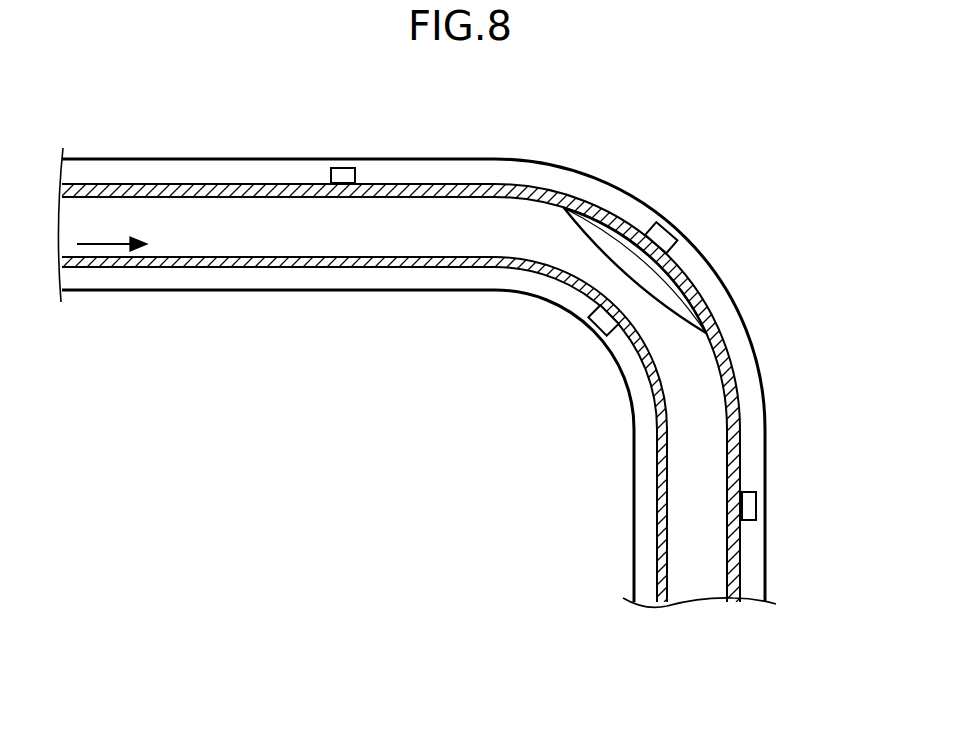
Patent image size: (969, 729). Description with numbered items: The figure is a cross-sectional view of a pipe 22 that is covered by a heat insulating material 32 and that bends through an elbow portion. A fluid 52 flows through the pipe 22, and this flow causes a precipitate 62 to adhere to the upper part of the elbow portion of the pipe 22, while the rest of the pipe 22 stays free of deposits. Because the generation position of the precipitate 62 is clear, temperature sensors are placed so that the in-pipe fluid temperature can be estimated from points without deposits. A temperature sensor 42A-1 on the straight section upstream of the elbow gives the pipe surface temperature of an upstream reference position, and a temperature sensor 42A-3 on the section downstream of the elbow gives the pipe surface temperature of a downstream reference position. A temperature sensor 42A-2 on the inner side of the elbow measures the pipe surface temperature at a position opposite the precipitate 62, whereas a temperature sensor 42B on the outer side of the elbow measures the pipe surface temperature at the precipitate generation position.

The pipe 22 is at (200, 262).
The heat insulating material 32 is at (290, 281).
The fluid 52 is at (117, 244).
The temperature sensor 42A-1 is at (344, 168).
The temperature sensor 42A-2 is at (597, 318).
The temperature sensor 42A-3 is at (757, 506).
The temperature sensor 42B is at (667, 240).
The precipitate 62 is at (674, 303).